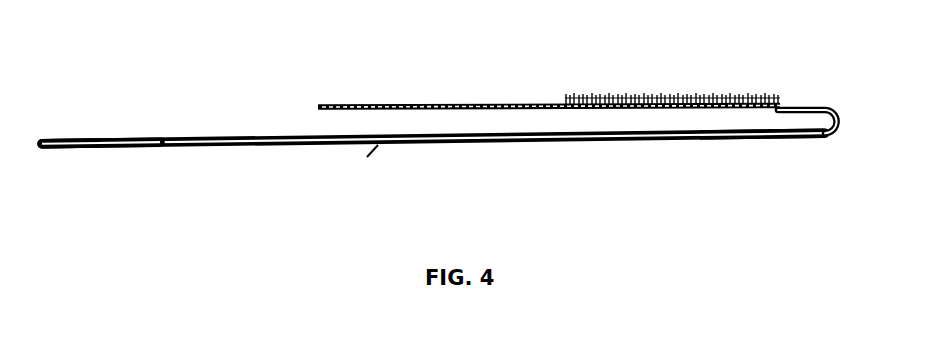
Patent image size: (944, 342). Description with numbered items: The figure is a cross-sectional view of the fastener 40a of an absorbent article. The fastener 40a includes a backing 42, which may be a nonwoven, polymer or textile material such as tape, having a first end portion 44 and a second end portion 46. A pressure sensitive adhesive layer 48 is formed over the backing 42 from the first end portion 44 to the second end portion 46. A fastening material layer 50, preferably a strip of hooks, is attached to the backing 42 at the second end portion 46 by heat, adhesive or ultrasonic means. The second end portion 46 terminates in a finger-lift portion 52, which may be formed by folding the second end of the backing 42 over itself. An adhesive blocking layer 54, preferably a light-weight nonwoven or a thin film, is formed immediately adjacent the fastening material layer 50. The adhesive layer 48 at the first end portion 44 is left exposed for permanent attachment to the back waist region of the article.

The fastener 40a is at (200, 73).
The backing 42 is at (283, 145).
The first end portion 44 is at (117, 147).
The second end portion 46 is at (763, 140).
The pressure sensitive adhesive layer 48 is at (95, 120).
The fastening material layer 50 is at (690, 93).
The finger-lift portion 52 is at (832, 108).
The adhesive blocking layer 54 is at (444, 104).